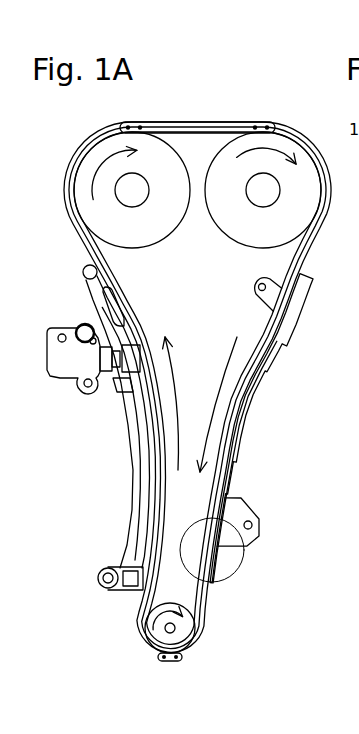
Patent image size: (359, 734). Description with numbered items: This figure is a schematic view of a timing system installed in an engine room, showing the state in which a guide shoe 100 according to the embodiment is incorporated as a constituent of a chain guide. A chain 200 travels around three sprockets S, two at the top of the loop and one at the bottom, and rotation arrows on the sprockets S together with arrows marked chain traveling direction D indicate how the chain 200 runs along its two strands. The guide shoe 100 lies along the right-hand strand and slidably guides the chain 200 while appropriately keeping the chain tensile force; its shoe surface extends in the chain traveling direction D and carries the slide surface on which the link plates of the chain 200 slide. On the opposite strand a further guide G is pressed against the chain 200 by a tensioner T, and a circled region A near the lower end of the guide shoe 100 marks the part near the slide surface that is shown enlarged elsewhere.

The sprockets S is at (140, 158).
The chain 200 is at (205, 638).
The guide shoe 100 is at (243, 437).
The movable guide G is at (138, 470).
The tensioner T is at (58, 340).
The chain traveling direction D is at (200, 412).
The region A is at (212, 564).